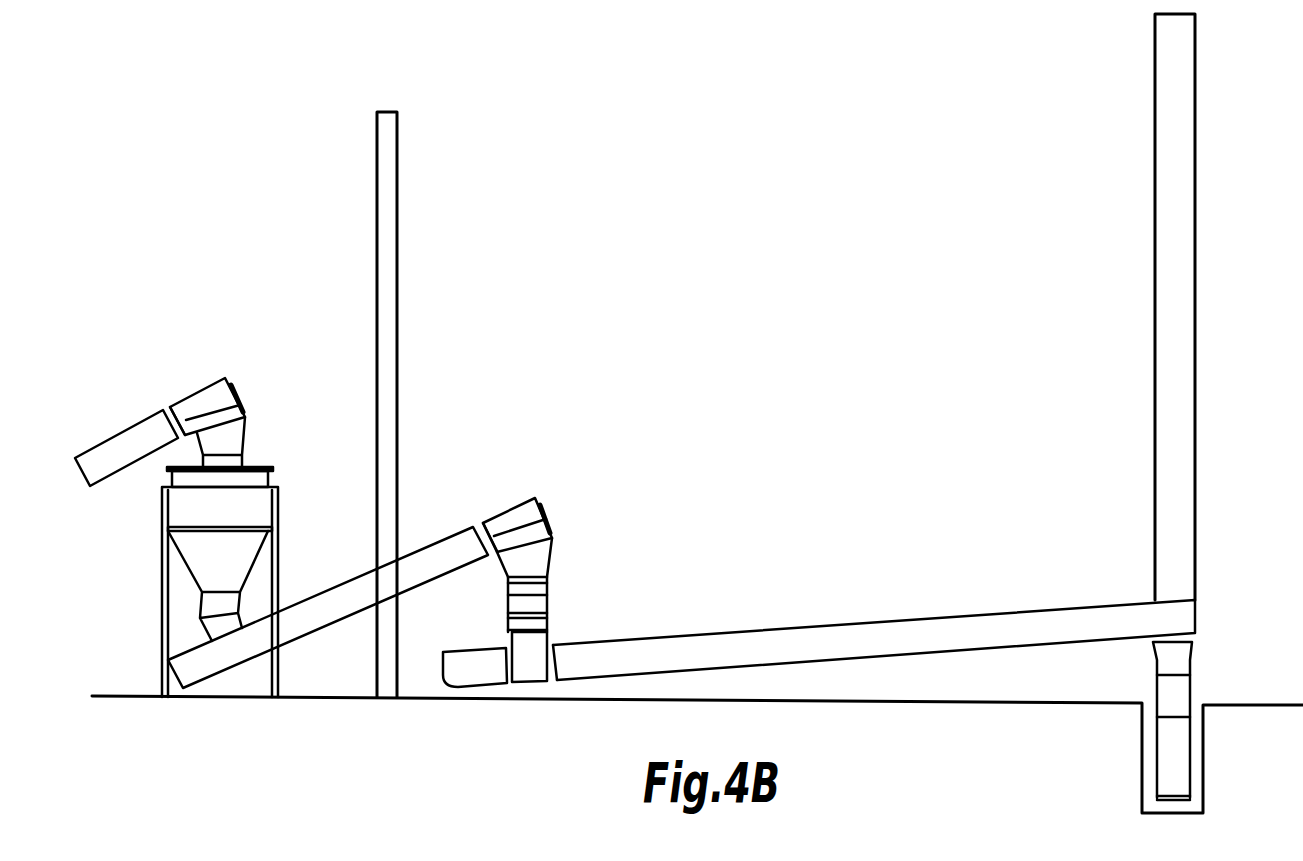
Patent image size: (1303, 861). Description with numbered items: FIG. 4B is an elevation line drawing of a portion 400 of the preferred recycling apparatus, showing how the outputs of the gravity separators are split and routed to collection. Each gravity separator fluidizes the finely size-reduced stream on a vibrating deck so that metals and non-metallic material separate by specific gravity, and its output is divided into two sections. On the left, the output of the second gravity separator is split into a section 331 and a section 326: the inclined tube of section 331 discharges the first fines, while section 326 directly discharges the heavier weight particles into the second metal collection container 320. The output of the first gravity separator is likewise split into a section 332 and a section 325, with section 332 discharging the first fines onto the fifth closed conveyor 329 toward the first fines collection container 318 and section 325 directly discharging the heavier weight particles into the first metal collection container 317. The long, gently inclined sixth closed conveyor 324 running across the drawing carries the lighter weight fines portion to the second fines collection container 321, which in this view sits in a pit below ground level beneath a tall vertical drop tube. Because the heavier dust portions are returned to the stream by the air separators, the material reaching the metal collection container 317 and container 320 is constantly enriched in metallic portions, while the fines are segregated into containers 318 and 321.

The portion of the preferred embodiment 400 is at (747, 341).
The section 331 is at (110, 440).
The section 332 is at (137, 428).
The section 325 is at (413, 547).
The section 326 is at (450, 545).
The first metal collection container 317 is at (547, 593).
The second metal collection container 320 is at (548, 623).
The fifth closed conveyor 329 is at (823, 627).
The sixth closed conveyor 324 is at (953, 623).
The first fines collection container 318 is at (1183, 760).
The second fines collection container 321 is at (1180, 783).